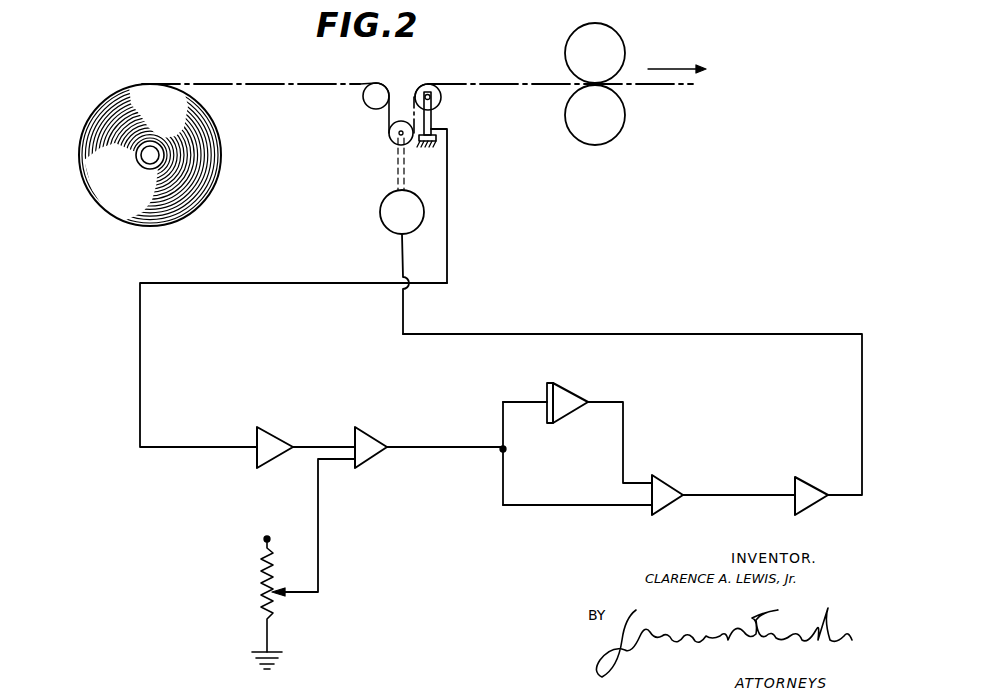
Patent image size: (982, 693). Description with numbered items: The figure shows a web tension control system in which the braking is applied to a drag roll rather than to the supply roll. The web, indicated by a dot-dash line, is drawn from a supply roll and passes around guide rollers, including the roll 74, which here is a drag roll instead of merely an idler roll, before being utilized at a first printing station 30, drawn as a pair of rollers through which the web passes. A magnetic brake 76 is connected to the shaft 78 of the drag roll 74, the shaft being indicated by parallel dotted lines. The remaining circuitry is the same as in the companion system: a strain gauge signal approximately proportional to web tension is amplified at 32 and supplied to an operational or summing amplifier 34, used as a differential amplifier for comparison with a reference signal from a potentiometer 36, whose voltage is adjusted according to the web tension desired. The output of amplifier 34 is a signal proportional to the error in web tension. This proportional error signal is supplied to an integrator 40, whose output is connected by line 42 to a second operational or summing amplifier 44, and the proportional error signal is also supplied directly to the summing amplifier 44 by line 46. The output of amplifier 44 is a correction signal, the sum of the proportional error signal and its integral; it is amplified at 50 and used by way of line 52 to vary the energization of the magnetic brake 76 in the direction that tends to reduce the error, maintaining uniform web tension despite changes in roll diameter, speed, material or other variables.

The first printing station 30 is at (624, 40).
The amplifier 32 is at (268, 434).
The operational or summing amplifier 34 is at (368, 434).
The potentiometer 36 is at (262, 592).
The integrator 40 is at (563, 395).
The line 42 is at (624, 450).
The second operational or summing amplifier 44 is at (661, 484).
The line 46 is at (557, 506).
The amplifier 50 is at (806, 490).
The line 52 is at (745, 334).
The drag roll 74 is at (390, 143).
The magnetic brake 76 is at (381, 220).
The shaft 78 is at (406, 171).